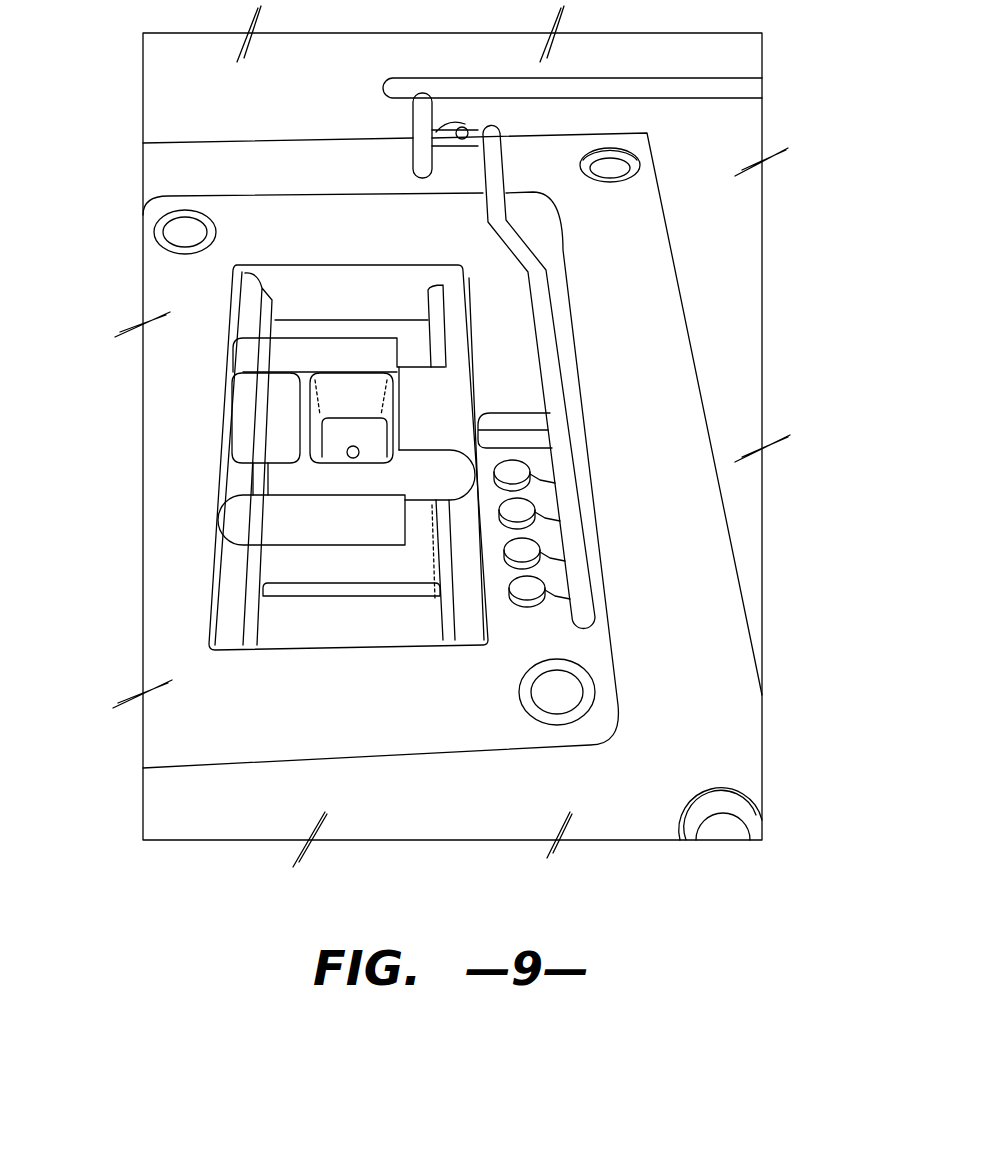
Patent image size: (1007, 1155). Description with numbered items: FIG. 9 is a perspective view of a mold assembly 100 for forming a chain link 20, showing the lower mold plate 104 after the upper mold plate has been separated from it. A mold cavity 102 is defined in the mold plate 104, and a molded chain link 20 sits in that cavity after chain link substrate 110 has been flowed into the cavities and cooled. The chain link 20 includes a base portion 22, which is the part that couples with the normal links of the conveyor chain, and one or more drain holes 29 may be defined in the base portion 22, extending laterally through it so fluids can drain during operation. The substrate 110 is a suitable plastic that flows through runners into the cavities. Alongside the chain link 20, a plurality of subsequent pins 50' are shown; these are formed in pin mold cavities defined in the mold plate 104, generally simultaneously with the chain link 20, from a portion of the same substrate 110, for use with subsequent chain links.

The mold assembly 100 is at (126, 240).
The mold plate 104 is at (240, 806).
The mold cavity 102 is at (295, 625).
The base portion 22 is at (325, 355).
The drain hole 29 is at (351, 450).
The chain link 20 is at (262, 486).
The chain link substrate 110 is at (541, 285).
The subsequent pin 50' is at (594, 533).